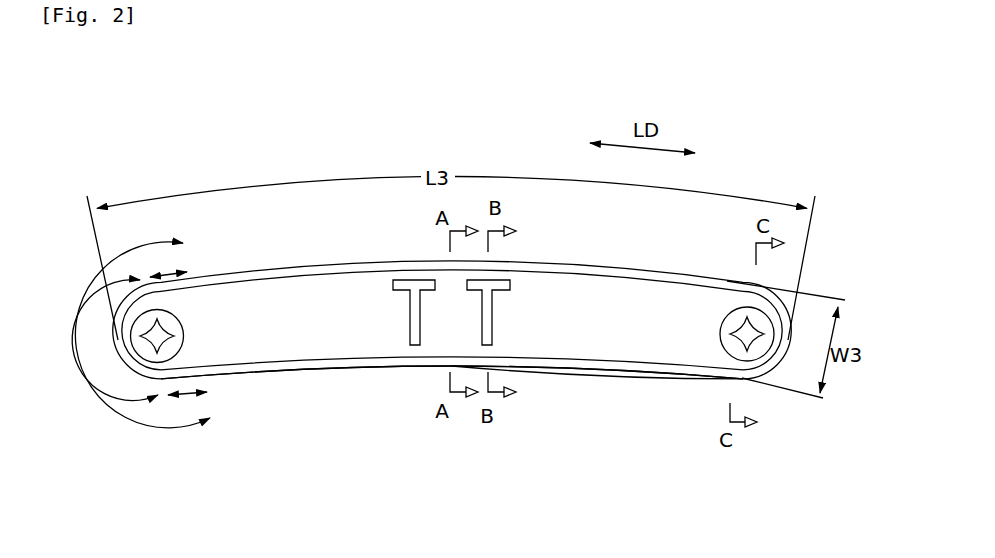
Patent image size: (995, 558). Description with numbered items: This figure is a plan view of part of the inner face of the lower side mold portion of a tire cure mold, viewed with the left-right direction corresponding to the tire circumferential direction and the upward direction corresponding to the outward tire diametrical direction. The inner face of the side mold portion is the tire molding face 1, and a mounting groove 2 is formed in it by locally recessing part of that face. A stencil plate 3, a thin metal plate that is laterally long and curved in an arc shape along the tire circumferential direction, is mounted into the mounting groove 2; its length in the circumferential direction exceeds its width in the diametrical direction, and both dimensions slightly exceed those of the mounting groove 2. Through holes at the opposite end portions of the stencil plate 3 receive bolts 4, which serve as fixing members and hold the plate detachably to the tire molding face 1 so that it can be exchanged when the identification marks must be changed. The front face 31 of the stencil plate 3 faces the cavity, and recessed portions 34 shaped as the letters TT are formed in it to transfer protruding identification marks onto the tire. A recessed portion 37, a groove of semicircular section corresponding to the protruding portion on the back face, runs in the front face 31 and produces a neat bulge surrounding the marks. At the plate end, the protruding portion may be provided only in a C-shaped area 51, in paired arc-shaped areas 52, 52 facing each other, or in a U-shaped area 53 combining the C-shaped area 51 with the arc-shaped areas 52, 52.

The tire molding face 1 is at (366, 447).
The mounting groove 2 is at (283, 372).
The stencil plate 3 is at (290, 266).
The bolt 4 is at (175, 326).
The front face 31 is at (617, 352).
The recessed portion 34 is at (409, 305).
The recessed portion 37 is at (674, 374).
The C-shaped area 51 is at (113, 321).
The arc-shaped area 52 is at (168, 273).
The U-shaped area 53 is at (93, 390).